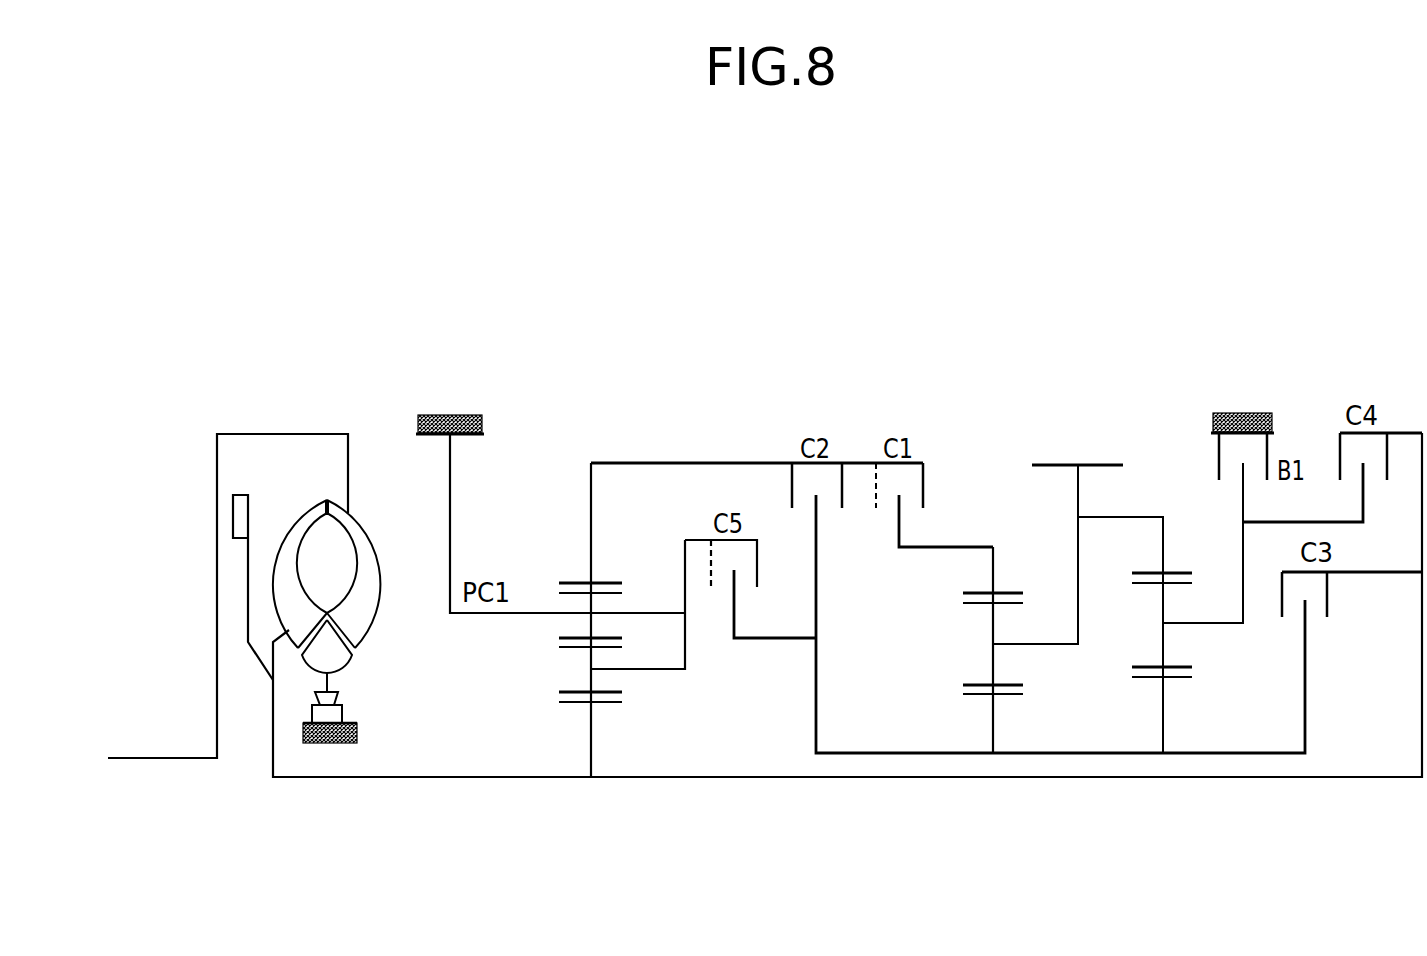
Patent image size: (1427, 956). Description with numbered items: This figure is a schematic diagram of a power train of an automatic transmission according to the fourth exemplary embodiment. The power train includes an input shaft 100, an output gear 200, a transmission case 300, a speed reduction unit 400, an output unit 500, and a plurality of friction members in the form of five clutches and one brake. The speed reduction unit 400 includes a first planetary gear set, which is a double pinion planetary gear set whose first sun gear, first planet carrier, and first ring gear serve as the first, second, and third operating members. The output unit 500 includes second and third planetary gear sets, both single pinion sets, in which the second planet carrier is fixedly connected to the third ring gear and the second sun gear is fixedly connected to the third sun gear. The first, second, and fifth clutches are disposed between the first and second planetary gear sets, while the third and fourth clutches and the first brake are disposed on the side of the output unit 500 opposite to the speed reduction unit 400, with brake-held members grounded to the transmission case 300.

The input shaft 100 is at (402, 778).
The output gear 200 is at (1078, 503).
The transmission case 300 is at (466, 413).
The speed reduction unit 400 is at (617, 745).
The output unit 500 is at (1021, 735).